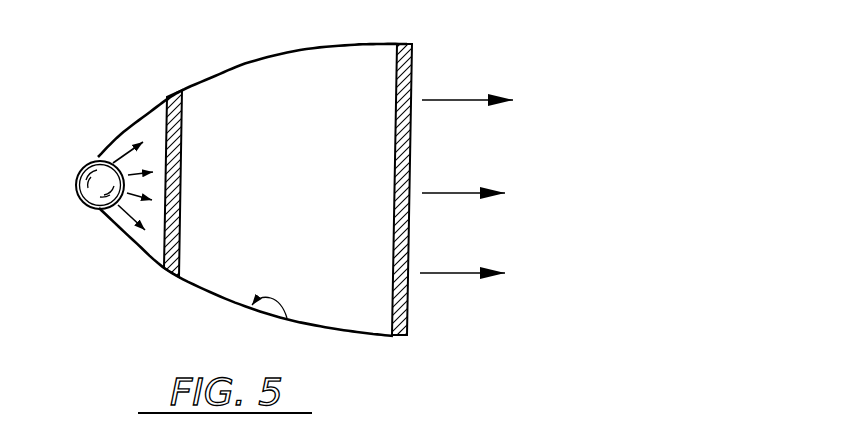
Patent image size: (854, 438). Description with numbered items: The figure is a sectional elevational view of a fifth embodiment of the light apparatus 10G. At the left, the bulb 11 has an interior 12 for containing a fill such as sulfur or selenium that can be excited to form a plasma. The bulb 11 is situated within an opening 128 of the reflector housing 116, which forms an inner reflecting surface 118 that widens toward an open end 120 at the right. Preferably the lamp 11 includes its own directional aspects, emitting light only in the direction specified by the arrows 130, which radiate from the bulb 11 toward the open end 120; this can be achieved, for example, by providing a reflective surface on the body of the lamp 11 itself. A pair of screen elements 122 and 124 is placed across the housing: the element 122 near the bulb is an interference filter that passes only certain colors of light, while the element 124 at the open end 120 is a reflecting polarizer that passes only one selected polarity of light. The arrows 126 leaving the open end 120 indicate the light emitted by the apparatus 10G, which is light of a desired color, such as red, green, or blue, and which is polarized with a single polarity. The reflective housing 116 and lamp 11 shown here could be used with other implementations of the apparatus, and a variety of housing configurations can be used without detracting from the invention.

The light apparatus 10G is at (322, 47).
The bulb 11 is at (93, 158).
The interior 12 is at (95, 186).
The reflector housing 116 is at (193, 288).
The inner reflecting surface 118 is at (283, 320).
The open end 120 is at (372, 143).
The interference filter 122 is at (177, 95).
The reflecting polarizer 124 is at (405, 45).
The arrows indicating emitted light 126 is at (460, 100).
The opening 128 is at (95, 210).
The arrows indicating lamp emission direction 130 is at (125, 152).